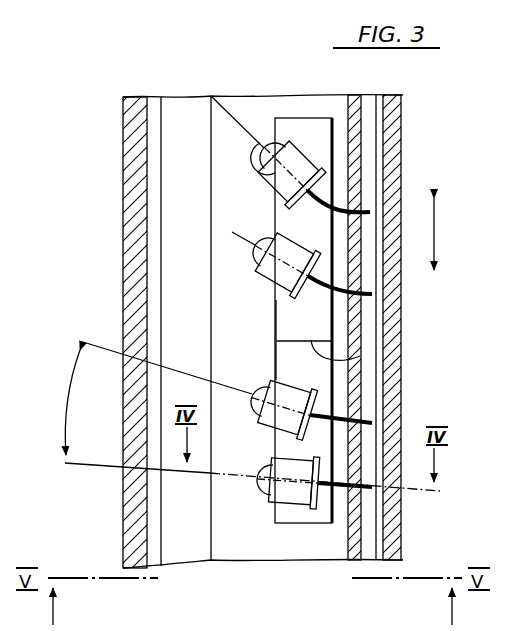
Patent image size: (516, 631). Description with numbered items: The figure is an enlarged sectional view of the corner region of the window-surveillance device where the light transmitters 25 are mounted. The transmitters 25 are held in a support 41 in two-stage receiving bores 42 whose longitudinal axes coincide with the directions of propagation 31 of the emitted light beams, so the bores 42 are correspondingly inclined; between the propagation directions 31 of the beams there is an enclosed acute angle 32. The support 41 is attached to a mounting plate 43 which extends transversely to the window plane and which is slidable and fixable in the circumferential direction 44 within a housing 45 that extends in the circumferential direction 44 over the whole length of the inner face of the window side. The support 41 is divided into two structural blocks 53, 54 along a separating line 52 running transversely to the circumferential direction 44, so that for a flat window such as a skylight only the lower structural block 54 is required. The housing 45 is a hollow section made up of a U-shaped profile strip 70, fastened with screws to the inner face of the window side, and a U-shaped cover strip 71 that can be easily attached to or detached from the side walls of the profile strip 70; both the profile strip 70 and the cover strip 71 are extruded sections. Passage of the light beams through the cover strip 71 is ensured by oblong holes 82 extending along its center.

The light transmitter 25 is at (293, 250).
The direction of propagation 31 is at (224, 105).
The acute angle 32 is at (251, 416).
The support 41 is at (298, 113).
The two-stage receiving bore 42 is at (285, 152).
The mounting plate 43 is at (356, 152).
The circumferential direction 44 is at (436, 233).
The housing 45 is at (173, 92).
The separating line 52 is at (360, 356).
The structural block 53 is at (297, 323).
The structural block 54 is at (294, 360).
The profile strip 70 is at (393, 120).
The cover strip 71 is at (178, 150).
The oblong hole 82 is at (153, 188).